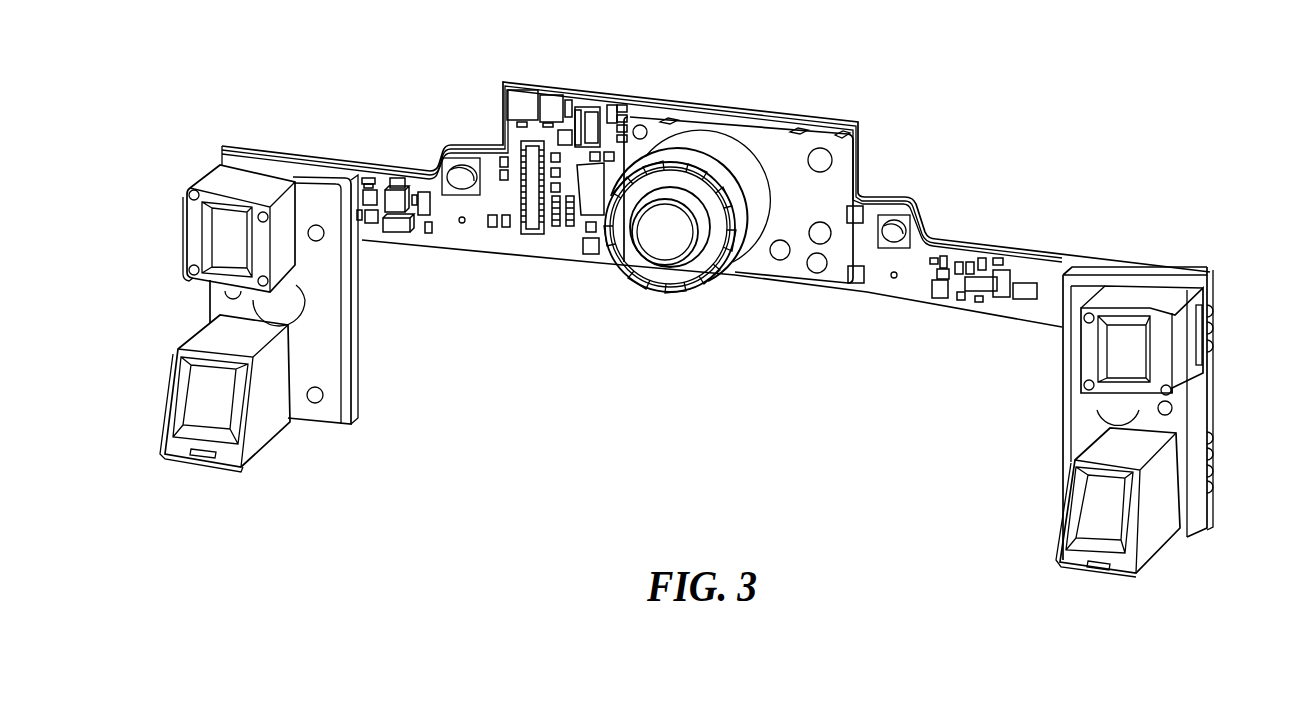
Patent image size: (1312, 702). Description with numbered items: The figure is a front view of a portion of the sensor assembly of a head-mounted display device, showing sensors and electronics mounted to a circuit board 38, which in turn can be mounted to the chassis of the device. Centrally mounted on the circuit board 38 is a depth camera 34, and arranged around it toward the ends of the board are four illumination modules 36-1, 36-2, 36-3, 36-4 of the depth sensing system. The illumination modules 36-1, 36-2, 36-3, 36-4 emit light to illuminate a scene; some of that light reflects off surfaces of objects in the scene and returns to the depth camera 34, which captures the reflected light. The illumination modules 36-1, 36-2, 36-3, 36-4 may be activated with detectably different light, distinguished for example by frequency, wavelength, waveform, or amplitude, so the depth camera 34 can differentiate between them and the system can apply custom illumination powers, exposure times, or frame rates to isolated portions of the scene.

The depth camera 34 is at (757, 147).
The circuit board 38 is at (1052, 254).
The illumination module 36-1 is at (1182, 343).
The illumination module 36-2 is at (225, 240).
The illumination module 36-3 is at (207, 393).
The illumination module 36-4 is at (1166, 503).